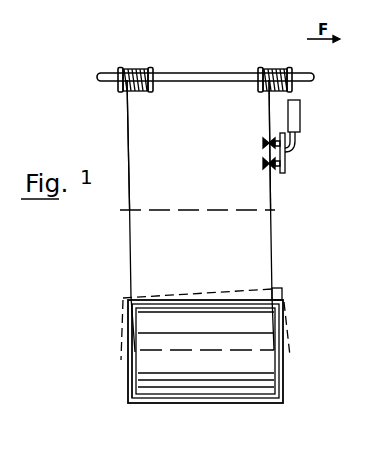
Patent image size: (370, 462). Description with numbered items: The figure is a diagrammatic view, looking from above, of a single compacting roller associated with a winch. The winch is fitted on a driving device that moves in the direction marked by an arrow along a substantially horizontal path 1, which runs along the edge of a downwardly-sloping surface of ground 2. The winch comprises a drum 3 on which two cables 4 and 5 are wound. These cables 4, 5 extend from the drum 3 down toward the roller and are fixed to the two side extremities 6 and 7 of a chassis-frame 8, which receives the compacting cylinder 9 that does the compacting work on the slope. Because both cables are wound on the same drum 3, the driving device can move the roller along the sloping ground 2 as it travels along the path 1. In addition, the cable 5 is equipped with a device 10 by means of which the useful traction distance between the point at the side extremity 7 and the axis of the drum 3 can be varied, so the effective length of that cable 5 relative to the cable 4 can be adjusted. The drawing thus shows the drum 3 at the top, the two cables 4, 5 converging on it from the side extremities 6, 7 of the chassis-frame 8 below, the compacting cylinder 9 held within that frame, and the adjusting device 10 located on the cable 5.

The substantially horizontal path 1 is at (208, 153).
The downwardly-sloping surface of ground 2 is at (206, 244).
The drum 3 is at (213, 73).
The cable 4 is at (130, 205).
The cable 5 is at (270, 202).
The side extremity 6 is at (126, 300).
The side extremity 7 is at (283, 300).
The chassis-frame 8 is at (128, 380).
The compacting cylinder 9 is at (250, 367).
The device 10 is at (298, 151).